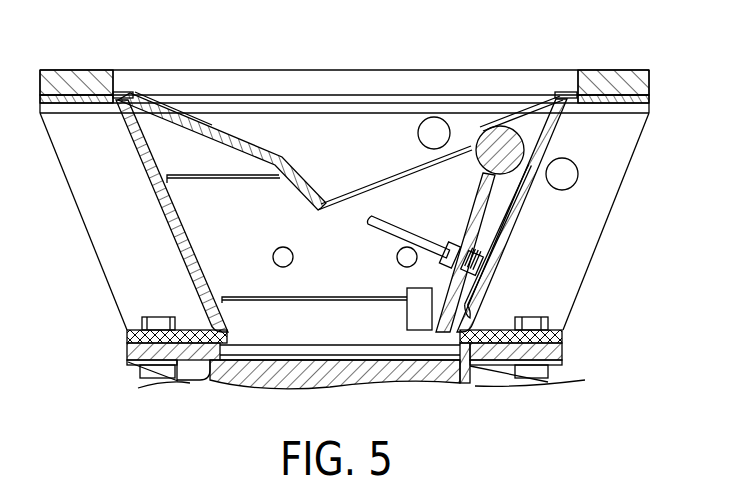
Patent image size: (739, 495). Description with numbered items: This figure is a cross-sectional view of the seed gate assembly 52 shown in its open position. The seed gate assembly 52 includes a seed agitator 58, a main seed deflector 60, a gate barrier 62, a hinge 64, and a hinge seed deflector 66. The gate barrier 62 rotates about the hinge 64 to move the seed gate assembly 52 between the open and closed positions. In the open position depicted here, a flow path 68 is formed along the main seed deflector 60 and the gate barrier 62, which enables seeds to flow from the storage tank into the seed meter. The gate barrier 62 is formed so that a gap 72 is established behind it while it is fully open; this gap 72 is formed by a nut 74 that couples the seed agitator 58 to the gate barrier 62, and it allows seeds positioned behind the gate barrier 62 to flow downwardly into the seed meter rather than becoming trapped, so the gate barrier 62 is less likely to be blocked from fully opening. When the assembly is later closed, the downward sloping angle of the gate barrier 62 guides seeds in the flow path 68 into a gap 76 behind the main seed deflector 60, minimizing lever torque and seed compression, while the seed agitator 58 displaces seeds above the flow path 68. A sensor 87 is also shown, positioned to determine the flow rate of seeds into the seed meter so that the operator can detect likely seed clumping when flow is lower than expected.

The seed gate assembly 52 is at (134, 52).
The seed agitator 58 is at (383, 230).
The main seed deflector 60 is at (162, 113).
The gate barrier 62 is at (472, 233).
The hinge 64 is at (480, 139).
The hinge seed deflector 66 is at (533, 107).
The flow path 68 is at (377, 256).
The gap 72 is at (453, 331).
The nut 74 is at (482, 261).
The gap behind the main seed deflector 76 is at (181, 153).
The sensor 87 is at (407, 310).